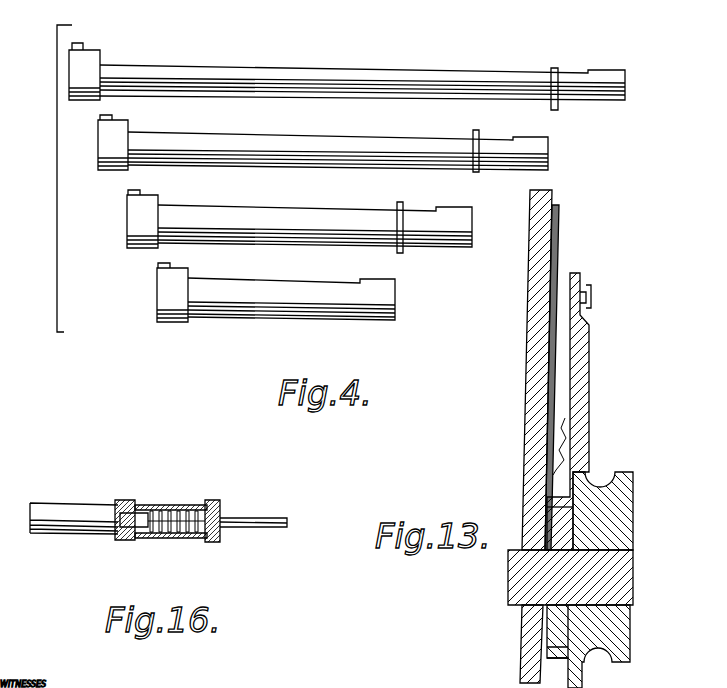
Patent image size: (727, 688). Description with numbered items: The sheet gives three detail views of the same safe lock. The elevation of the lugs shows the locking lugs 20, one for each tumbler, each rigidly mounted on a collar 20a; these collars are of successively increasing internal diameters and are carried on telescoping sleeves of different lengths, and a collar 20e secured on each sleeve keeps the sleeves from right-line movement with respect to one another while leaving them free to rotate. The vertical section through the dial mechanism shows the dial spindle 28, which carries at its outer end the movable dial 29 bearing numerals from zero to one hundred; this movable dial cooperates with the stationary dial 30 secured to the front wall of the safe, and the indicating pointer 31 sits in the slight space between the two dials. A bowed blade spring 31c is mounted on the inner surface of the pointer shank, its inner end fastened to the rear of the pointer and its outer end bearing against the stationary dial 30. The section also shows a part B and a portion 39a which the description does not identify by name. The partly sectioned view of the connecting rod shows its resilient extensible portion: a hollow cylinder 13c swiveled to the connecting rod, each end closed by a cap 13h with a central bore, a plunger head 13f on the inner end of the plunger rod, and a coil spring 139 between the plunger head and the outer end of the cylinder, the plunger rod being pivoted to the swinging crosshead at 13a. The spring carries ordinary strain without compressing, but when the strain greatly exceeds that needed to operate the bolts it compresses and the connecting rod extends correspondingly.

In FIG. 4, the locking lug 20 is at (83, 46).
In FIG. 4, the collar 20a is at (118, 128).
In FIG. 4, the collar 20e is at (476, 140).
In FIG. 13, the bar B is at (525, 390).
In FIG. 13, the stationary dial 30 is at (560, 245).
In FIG. 13, the indicating pointer 31 is at (576, 283).
In FIG. 13, the movable dial 29 is at (589, 393).
In FIG. 13, the bowed blade spring 31c is at (563, 446).
In FIG. 13, the block 39a is at (633, 497).
In FIG. 13, the dial spindle 28 is at (508, 590).
In FIG. 16, the pivot 13a is at (115, 536).
In FIG. 16, the cap 13h is at (125, 500).
In FIG. 16, the hollow cylinder 13c is at (165, 507).
In FIG. 16, the coil spring 139 is at (196, 510).
In FIG. 16, the plunger head 13f is at (145, 528).